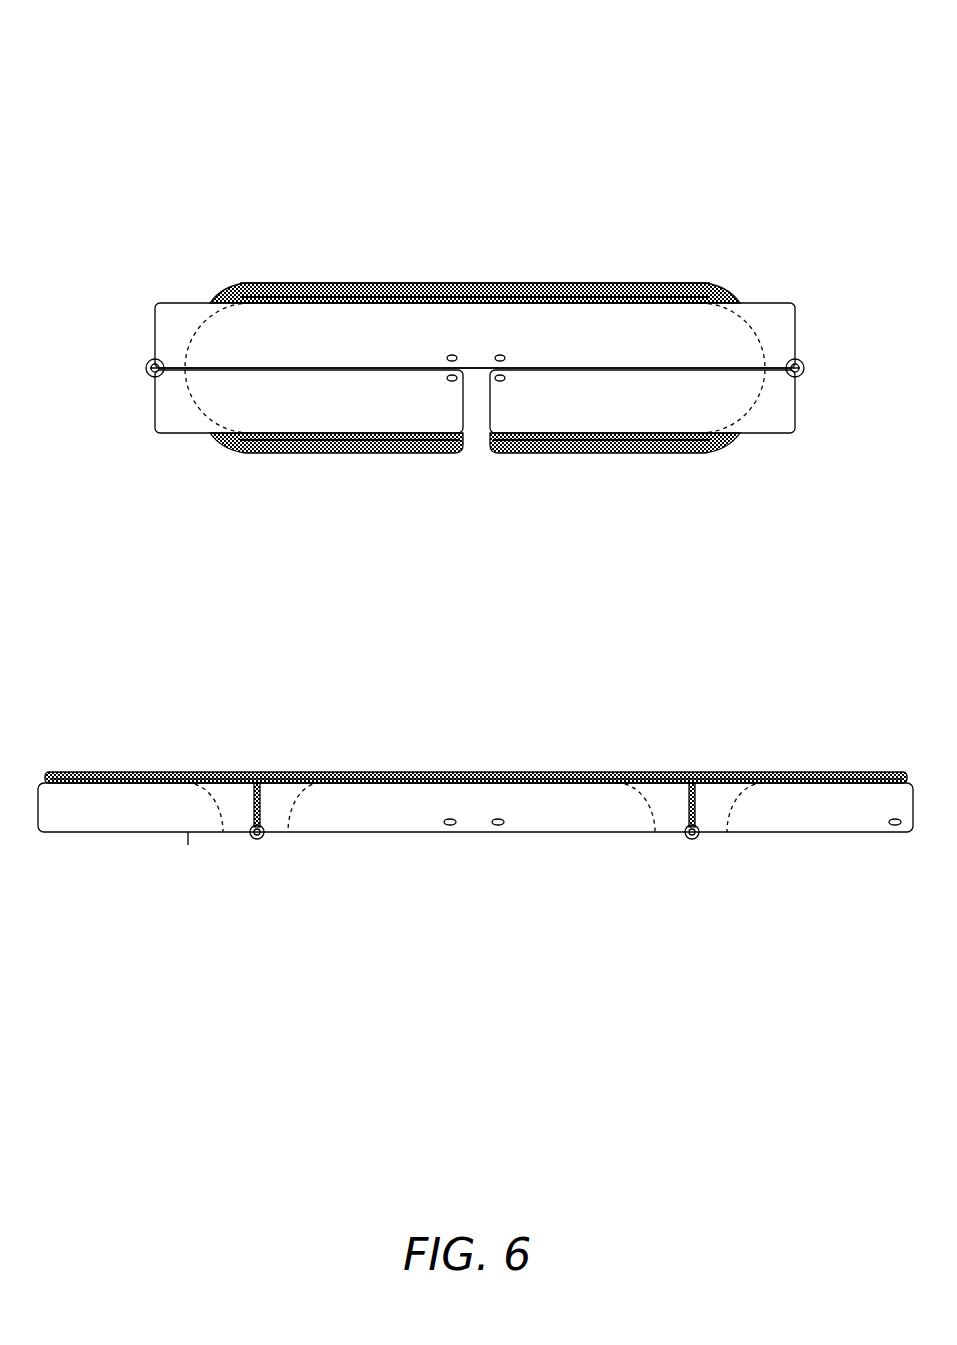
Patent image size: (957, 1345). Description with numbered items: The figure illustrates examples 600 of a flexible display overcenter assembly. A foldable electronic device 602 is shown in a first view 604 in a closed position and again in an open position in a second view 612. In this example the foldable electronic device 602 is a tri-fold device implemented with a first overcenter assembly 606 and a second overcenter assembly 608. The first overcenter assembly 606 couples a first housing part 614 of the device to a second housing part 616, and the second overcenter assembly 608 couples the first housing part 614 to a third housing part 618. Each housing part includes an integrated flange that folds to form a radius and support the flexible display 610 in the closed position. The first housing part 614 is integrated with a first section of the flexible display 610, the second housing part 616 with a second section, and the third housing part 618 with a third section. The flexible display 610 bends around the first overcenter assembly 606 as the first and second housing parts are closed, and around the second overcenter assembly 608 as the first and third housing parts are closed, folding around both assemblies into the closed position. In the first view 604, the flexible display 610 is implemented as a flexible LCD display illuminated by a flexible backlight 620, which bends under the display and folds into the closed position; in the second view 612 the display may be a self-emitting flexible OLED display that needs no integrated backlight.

The examples of a flexible display overcenter assembly 600 is at (778, 68).
The foldable electronic device 602 is at (493, 496).
The first view 604 is at (288, 228).
The first overcenter assembly 606 is at (182, 327).
The second overcenter assembly 608 is at (773, 325).
The flexible display 610 is at (625, 285).
The second view 612 is at (676, 717).
The first housing part 614 is at (340, 325).
The second housing part 616 is at (353, 418).
The third housing part 618 is at (670, 418).
The flexible backlight 620 is at (505, 292).